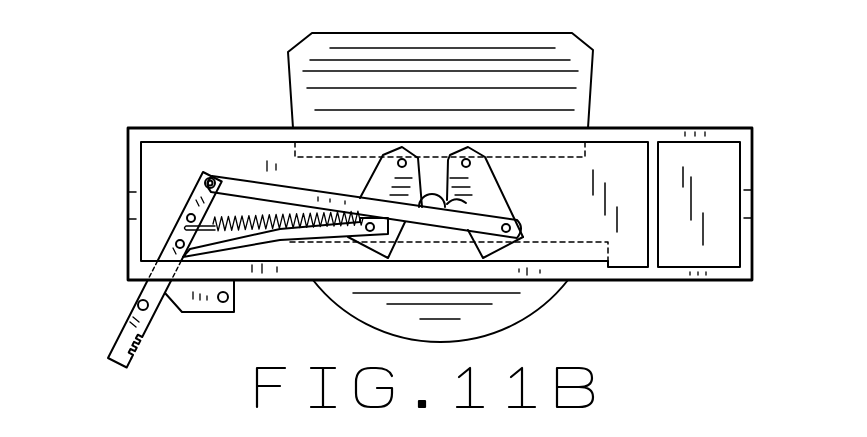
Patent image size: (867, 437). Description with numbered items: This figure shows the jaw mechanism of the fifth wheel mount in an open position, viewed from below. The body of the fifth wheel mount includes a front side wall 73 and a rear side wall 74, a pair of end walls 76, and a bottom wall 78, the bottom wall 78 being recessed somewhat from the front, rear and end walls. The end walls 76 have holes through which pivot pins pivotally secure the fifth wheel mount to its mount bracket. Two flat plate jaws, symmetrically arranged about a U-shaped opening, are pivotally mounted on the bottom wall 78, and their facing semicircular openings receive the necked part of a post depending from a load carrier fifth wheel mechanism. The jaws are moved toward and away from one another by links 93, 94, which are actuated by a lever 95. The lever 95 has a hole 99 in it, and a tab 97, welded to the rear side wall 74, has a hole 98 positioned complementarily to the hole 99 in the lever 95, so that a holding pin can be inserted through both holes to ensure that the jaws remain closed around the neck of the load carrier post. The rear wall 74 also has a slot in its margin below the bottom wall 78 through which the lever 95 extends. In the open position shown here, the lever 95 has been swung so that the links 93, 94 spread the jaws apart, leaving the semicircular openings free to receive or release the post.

The front side wall 73 is at (608, 127).
The rear side wall 74 is at (583, 273).
The end walls 76 is at (127, 163).
The bottom wall 78 is at (183, 163).
The link 93 is at (248, 190).
The link 94 is at (288, 244).
The lever 95 is at (125, 342).
The tab 97 is at (186, 313).
The hole 98 is at (229, 300).
The hole 99 is at (138, 300).